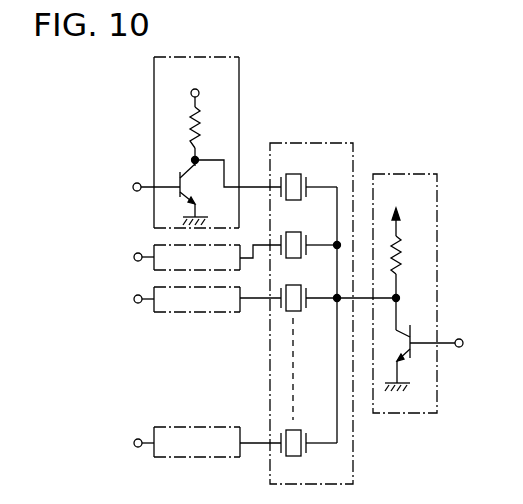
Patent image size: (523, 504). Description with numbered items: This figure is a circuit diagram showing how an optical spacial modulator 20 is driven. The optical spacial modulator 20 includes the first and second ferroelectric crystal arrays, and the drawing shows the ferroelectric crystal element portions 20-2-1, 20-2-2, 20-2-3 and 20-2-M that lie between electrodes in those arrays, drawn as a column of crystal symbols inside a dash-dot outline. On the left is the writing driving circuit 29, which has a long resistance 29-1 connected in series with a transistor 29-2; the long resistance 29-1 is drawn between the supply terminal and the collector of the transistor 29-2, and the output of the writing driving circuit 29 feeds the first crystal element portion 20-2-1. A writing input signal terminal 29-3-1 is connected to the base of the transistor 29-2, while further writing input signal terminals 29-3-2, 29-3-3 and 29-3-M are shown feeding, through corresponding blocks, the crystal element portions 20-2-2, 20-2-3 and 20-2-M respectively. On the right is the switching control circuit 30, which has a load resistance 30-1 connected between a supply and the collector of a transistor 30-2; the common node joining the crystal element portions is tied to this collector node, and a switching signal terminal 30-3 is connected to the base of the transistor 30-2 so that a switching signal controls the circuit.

The writing driving circuit 29 is at (180, 142).
The long resistance 29-1 is at (190, 124).
The transistor 29-2 is at (178, 177).
The writing input signal terminal 29-3-1 is at (138, 191).
The writing input signal terminal 29-3-2 is at (139, 261).
The writing input signal terminal 29-3-3 is at (139, 303).
The writing input signal terminal 29-3-M is at (139, 447).
The optical spacial modulator 20 is at (323, 291).
The ferroelectric crystal element portion 20-2-1 is at (292, 174).
The ferroelectric crystal element portion 20-2-2 is at (293, 227).
The ferroelectric crystal element portion 20-2-3 is at (293, 281).
The ferroelectric crystal element portion 20-2-M is at (296, 457).
The switching control circuit 30 is at (434, 315).
The load resistance 30-1 is at (405, 258).
The transistor 30-2 is at (412, 331).
The switching signal terminal 30-3 is at (459, 347).